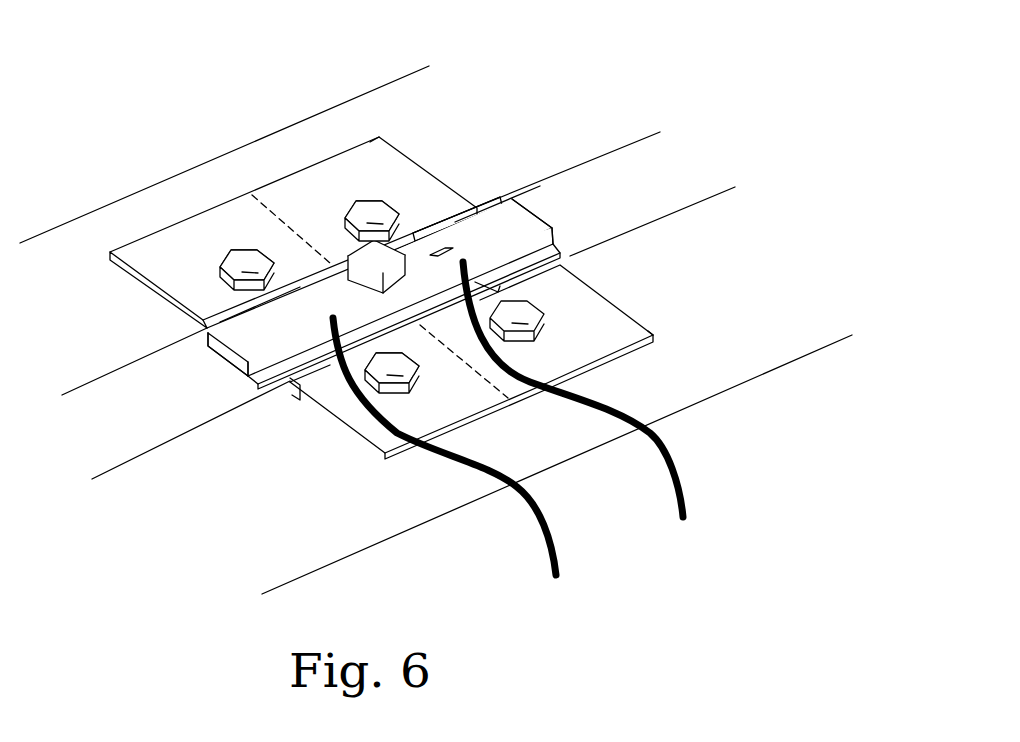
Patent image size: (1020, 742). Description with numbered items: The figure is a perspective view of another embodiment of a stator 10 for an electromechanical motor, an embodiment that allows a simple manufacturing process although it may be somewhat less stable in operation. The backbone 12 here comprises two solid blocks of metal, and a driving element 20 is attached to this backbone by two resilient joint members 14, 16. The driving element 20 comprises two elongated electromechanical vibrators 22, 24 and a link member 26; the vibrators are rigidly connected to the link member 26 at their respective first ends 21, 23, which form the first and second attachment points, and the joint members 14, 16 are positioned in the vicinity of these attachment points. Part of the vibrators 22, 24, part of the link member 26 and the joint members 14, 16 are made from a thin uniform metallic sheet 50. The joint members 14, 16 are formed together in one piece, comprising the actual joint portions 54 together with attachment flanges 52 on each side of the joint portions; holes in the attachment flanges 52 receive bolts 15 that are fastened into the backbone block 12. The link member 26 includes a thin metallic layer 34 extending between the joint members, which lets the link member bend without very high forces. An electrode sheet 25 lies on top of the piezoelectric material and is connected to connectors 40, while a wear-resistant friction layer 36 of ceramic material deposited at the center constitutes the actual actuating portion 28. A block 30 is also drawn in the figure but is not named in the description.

The stator 10 is at (93, 568).
The backbone portion 12 is at (586, 136).
The resilient joint member 14 is at (348, 430).
The bolt 15 is at (347, 212).
The resilient joint member 16 is at (585, 318).
The driving element 20 is at (513, 214).
The first end 21 is at (325, 290).
The electromechanical vibrator 22 is at (258, 265).
The first end 23 is at (400, 240).
The electromechanical vibrator 24 is at (486, 222).
The electrode sheet 25 is at (243, 337).
The link member 26 is at (330, 308).
The actuating portion 28 is at (368, 213).
The clamp block 30 is at (217, 358).
The metallic layer 34 is at (413, 300).
The wear-resistant friction layer 36 is at (433, 260).
The connector 40 is at (505, 460).
The metallic sheet 50 is at (263, 400).
The attachment flange 52 is at (370, 163).
The joint portion 54 is at (300, 390).